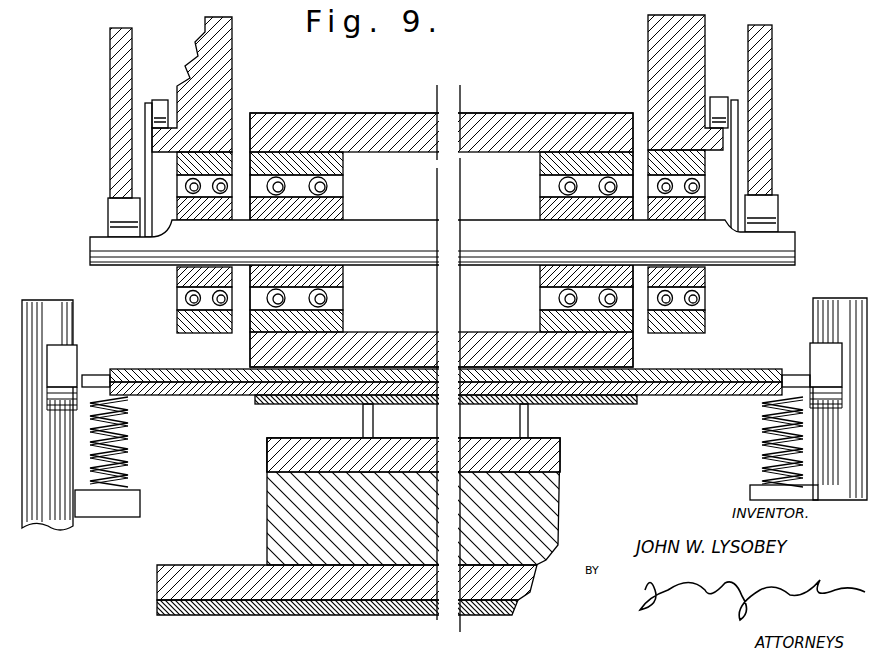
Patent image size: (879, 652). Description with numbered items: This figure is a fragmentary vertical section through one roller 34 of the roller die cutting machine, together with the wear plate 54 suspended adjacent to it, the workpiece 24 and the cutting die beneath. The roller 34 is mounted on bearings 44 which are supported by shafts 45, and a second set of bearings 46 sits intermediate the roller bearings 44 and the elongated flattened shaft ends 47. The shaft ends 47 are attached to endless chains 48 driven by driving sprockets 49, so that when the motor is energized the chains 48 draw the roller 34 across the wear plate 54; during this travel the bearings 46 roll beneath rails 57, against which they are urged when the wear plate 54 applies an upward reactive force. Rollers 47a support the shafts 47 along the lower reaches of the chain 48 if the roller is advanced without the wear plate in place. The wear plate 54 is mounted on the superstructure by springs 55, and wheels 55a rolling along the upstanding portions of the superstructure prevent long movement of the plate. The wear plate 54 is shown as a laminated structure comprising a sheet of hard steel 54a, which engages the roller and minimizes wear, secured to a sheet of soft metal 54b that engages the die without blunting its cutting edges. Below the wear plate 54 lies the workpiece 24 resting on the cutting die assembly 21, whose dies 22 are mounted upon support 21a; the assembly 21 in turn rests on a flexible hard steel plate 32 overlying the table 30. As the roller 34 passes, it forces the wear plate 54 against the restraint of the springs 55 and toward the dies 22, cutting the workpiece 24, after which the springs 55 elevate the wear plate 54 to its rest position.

The cutting die assembly 21 is at (600, 523).
The support 21a is at (268, 508).
The dies 22 is at (365, 398).
The workpiece 24 is at (637, 400).
The table 30 is at (158, 615).
The flexible hard steel plate 32 is at (165, 585).
The roller 34 is at (512, 112).
The bearings 44 is at (343, 203).
The shafts 45 is at (508, 228).
The second set of bearings 46 is at (177, 318).
The elongated flattened shaft ends 47 is at (90, 247).
The rollers 47a is at (157, 100).
The endless chains 48 is at (110, 206).
The driving sprockets 49 is at (128, 66).
The wear plate 54 is at (446, 405).
The sheet of hard steel 54a is at (163, 395).
The sheet of soft metal 54b is at (205, 396).
The springs 55 is at (128, 453).
The wheels 55a is at (68, 362).
The rails 57 is at (230, 72).